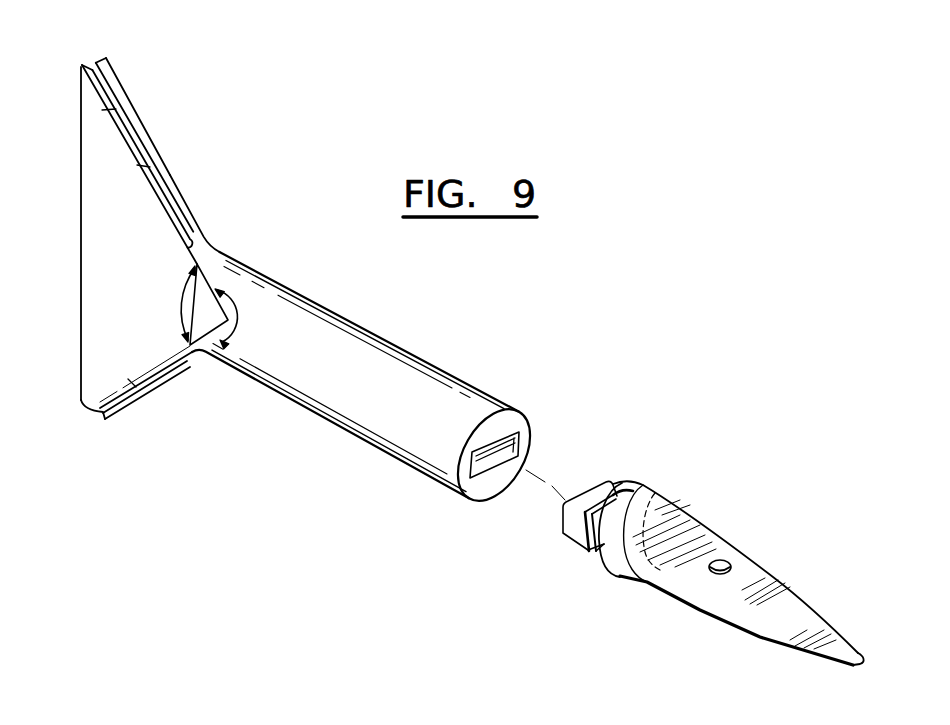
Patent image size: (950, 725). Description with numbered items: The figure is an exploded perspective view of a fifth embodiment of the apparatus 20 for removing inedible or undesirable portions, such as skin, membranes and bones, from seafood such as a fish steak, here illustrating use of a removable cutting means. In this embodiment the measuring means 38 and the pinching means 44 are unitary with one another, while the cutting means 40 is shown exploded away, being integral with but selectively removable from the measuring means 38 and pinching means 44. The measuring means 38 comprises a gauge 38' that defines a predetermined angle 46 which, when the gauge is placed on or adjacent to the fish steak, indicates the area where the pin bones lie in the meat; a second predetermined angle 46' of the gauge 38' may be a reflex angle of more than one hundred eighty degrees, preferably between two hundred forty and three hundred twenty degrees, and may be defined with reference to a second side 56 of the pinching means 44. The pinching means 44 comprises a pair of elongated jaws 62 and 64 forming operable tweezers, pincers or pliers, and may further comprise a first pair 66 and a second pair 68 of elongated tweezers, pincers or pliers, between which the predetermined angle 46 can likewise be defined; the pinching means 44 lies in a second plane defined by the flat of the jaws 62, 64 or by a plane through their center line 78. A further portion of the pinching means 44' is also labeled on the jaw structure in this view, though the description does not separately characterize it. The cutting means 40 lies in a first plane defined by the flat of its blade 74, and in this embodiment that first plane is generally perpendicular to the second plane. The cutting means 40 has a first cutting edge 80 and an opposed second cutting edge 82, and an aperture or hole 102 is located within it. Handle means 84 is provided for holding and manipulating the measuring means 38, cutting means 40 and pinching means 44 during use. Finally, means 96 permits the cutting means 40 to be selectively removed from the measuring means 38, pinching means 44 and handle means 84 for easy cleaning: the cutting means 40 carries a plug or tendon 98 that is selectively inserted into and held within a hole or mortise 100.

The apparatus 20 is at (329, 277).
The measuring means 38 is at (176, 236).
The gauge 38' is at (218, 213).
The cutting means 40 is at (722, 600).
The pinching means 44 is at (161, 257).
The second strip 44' is at (147, 147).
The first predetermined angle 46 is at (172, 304).
The second predetermined angle 46' is at (268, 320).
The second side 56 is at (148, 128).
The jaw 62 is at (86, 78).
The jaw 64 is at (115, 62).
The first pair of elongated tweezers 66 is at (100, 412).
The second pair of elongated tweezers 68 is at (97, 60).
The blade 74 is at (738, 562).
The center line 78 is at (123, 193).
The first cutting edge 80 is at (777, 637).
The second cutting edge 82 is at (817, 608).
The handle means 84 is at (407, 367).
The means for selectively removing the cutting means 96 is at (556, 544).
The plug or tendon 98 is at (603, 490).
The hole or mortise 100 is at (516, 444).
The aperture or hole 102 is at (719, 560).